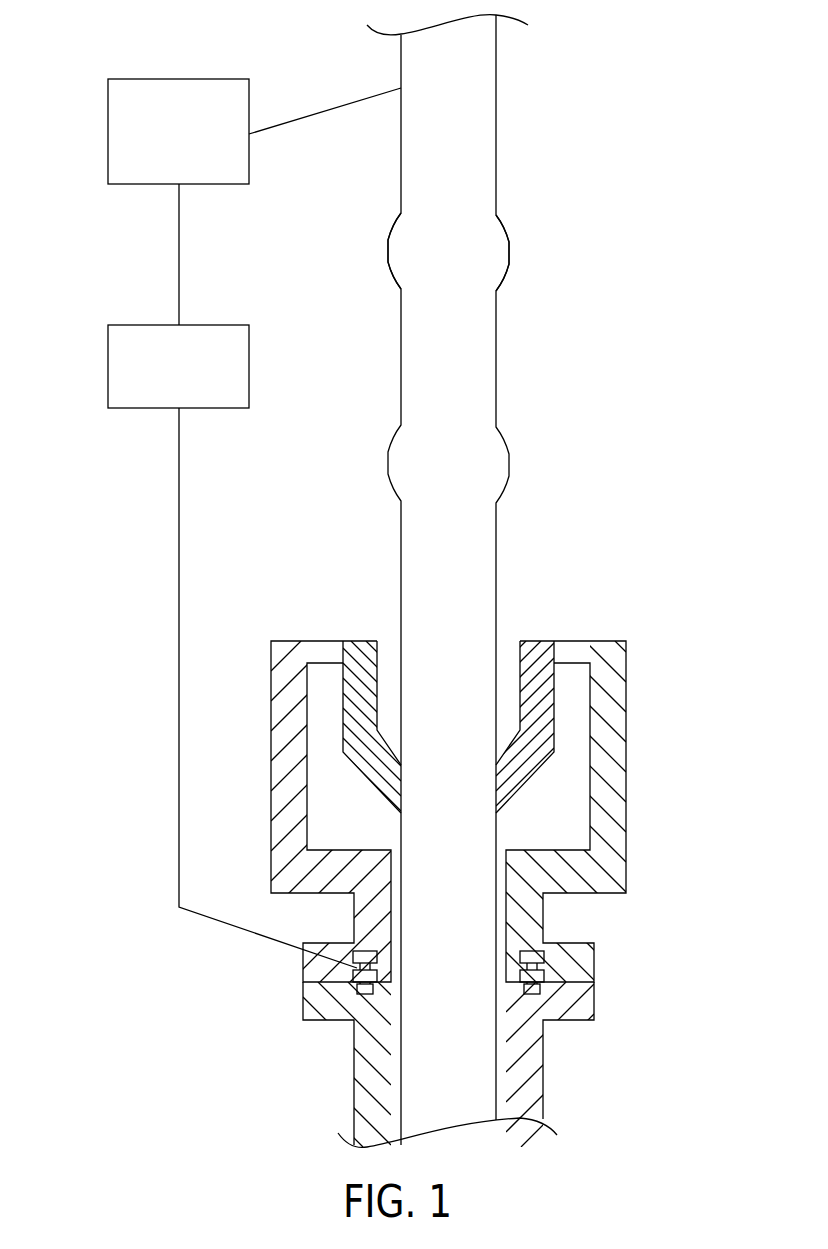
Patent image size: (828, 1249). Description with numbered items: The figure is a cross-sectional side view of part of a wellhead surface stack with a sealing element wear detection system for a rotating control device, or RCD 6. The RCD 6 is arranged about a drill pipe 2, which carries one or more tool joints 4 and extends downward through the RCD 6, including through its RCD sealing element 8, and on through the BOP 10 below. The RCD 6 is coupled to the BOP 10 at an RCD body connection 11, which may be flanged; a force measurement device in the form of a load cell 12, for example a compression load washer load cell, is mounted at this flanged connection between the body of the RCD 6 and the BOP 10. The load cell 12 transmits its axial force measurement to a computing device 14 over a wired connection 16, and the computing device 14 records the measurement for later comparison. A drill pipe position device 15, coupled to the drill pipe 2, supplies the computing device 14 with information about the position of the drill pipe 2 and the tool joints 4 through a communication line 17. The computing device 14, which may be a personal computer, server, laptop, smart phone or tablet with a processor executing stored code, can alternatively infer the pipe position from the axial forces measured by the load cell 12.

The drill pipe 2 is at (497, 110).
The tool joint 4 is at (387, 248).
The rotating control device (RCD) 6 is at (626, 738).
The RCD sealing element 8 is at (368, 783).
The BOP 10 is at (354, 1104).
The RCD body connection 11 is at (503, 1058).
The load cell 12 is at (357, 960).
The computing device 14 is at (108, 371).
The drill pipe position device 15 is at (108, 135).
The wired connection 16 is at (178, 593).
The communication line 17 is at (178, 261).